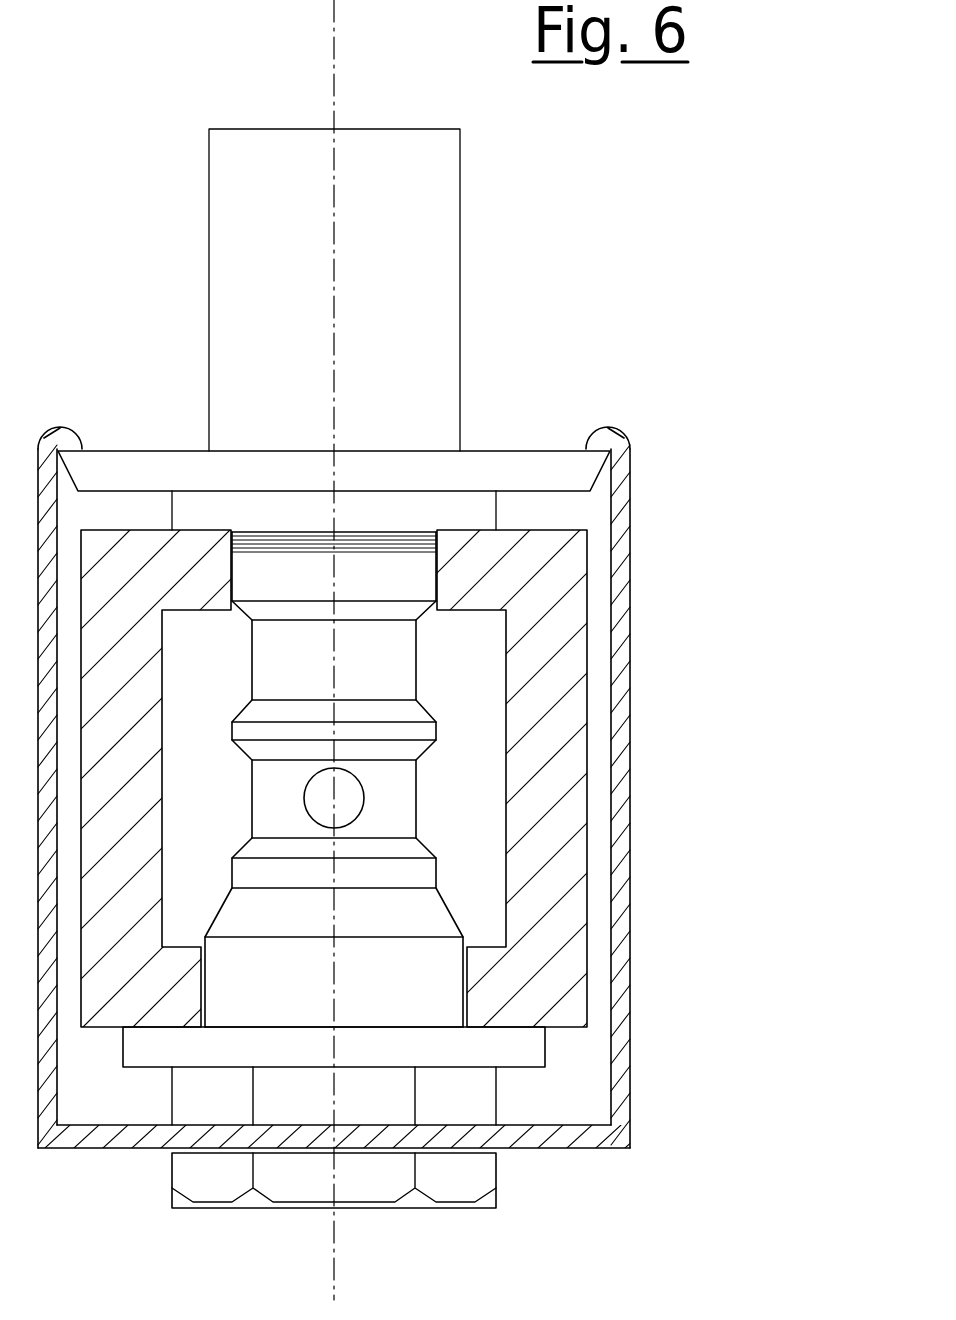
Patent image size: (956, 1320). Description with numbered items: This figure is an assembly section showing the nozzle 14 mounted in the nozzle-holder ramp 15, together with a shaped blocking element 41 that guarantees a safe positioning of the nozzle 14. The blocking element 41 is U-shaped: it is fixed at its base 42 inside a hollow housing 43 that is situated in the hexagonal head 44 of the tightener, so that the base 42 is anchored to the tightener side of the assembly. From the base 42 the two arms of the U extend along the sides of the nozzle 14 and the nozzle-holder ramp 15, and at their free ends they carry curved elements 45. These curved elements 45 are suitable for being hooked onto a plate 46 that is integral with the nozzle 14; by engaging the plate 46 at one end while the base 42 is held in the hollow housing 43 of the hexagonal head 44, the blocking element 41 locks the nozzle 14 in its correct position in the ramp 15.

The nozzle 14 is at (392, 808).
The nozzle-holder ramp 15 is at (508, 648).
The shaped blocking element 41 is at (621, 786).
The base 42 is at (120, 1133).
The hollow housing 43 is at (258, 1150).
The hexagonal head 44 is at (332, 1198).
The curved elements 45 is at (603, 429).
The plate 46 is at (150, 470).